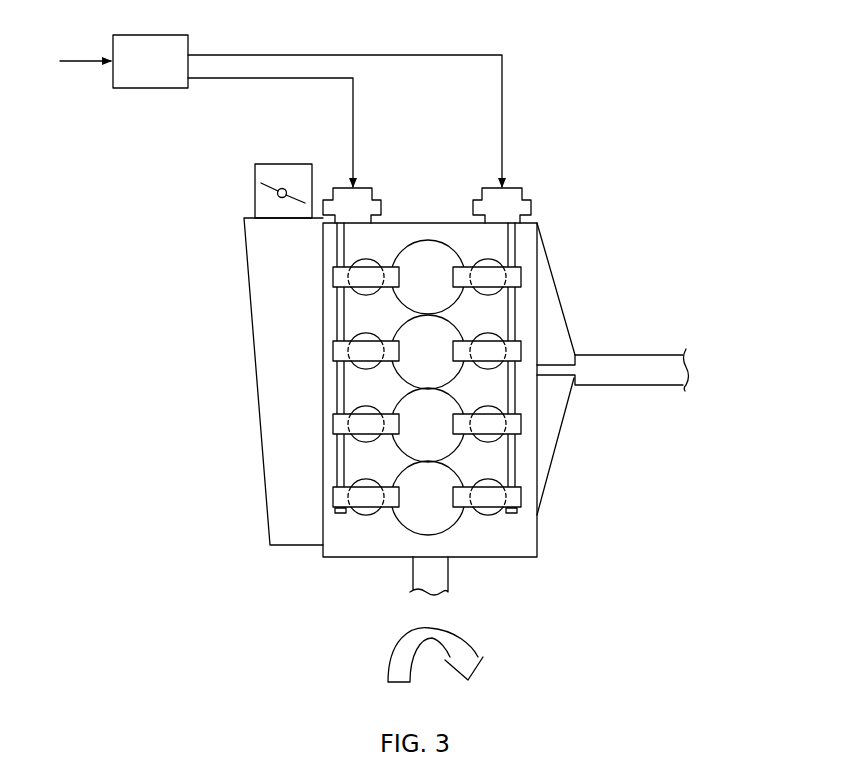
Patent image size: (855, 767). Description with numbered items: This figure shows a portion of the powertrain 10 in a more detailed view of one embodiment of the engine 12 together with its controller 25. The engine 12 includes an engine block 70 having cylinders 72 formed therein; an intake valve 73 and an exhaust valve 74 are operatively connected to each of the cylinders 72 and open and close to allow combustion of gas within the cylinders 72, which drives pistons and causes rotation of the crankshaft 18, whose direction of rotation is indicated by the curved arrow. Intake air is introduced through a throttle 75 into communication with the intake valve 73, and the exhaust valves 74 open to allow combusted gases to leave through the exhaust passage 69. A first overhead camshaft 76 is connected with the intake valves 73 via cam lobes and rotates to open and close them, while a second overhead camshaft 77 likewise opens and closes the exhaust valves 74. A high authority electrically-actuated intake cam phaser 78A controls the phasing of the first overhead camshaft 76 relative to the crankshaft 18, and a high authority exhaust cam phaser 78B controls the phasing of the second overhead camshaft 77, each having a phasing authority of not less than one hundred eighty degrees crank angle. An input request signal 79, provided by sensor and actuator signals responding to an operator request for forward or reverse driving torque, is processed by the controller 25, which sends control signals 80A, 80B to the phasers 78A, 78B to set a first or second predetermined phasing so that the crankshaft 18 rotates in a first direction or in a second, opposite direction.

The powertrain 10 is at (593, 24).
The engine 12 is at (581, 274).
The crankshaft 18 is at (448, 573).
The controller 25 is at (161, 74).
The exhaust passage 69 is at (653, 355).
The engine block 70 is at (523, 557).
The cylinders 72 is at (410, 305).
The intake valve 73 is at (355, 265).
The exhaust valve 74 is at (500, 265).
The throttle 75 is at (227, 175).
The first overhead camshaft 76 is at (333, 481).
The second overhead camshaft 77 is at (517, 460).
The intake cam phaser 78A is at (363, 188).
The exhaust cam phaser 78B is at (513, 188).
The input request signal 79 is at (90, 60).
The control signal 80A is at (268, 80).
The control signal 80B is at (430, 55).